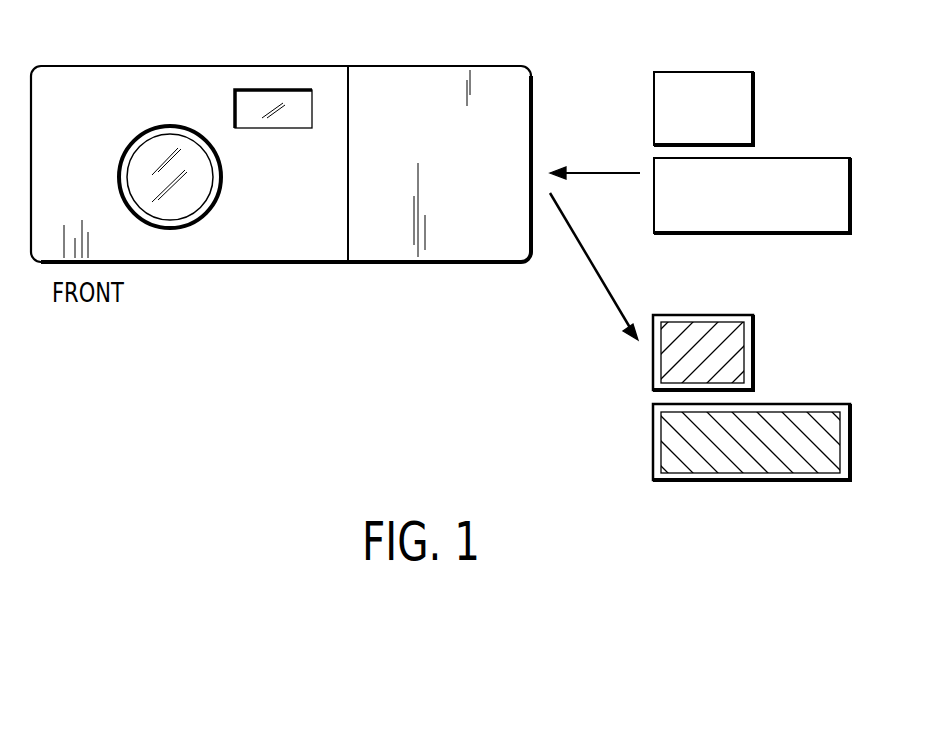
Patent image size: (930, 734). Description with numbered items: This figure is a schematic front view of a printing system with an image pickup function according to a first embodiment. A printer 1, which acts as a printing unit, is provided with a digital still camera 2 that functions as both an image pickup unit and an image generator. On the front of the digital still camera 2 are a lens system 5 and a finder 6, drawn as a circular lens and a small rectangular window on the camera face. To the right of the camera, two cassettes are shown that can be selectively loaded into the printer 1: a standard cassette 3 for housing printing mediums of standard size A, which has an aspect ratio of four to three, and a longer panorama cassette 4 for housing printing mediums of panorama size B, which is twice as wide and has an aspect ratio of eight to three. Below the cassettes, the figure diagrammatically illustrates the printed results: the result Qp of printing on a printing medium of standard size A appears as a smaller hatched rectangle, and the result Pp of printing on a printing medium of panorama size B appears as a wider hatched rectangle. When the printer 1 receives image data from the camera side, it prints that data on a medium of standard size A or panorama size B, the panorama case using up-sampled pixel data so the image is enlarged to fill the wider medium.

The printer 1 is at (478, 263).
The digital still camera 2 is at (225, 263).
The standard cassette 3 is at (702, 75).
The panorama cassette 4 is at (752, 232).
The lens system 5 is at (215, 192).
The finder 6 is at (288, 90).
The standard size A is at (653, 378).
The panorama size B is at (653, 456).
The result of printing on standard size medium Qp is at (678, 322).
The result of printing on panorama size medium Pp is at (752, 476).